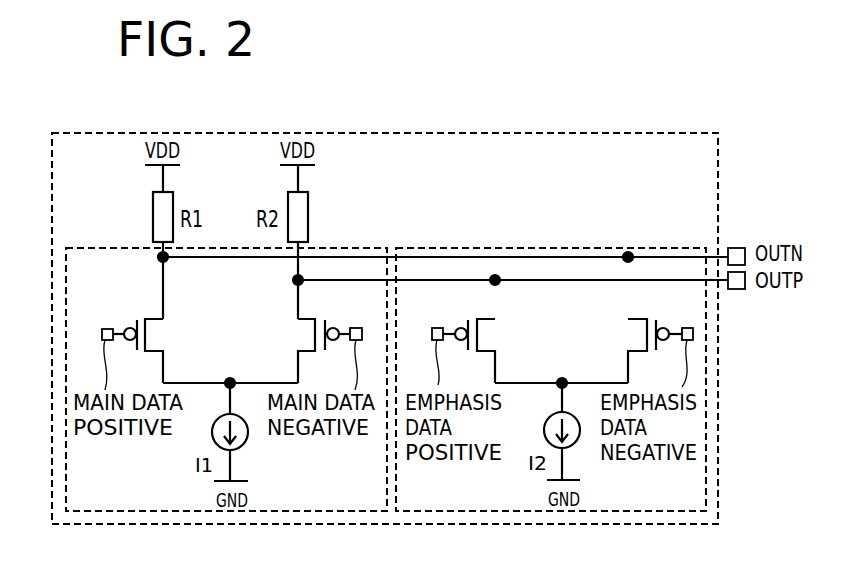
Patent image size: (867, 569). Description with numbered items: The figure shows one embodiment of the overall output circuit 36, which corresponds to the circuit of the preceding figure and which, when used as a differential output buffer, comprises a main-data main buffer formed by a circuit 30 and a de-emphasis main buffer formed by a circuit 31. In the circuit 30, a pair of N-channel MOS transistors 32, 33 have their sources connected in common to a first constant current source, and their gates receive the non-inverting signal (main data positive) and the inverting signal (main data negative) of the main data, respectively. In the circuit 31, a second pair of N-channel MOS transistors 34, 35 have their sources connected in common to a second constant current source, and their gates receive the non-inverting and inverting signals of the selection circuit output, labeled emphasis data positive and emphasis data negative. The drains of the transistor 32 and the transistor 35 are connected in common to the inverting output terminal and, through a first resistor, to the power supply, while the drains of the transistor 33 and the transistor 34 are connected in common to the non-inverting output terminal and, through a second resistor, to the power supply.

The circuit 30 is at (335, 248).
The circuit 31 is at (423, 248).
The N-channel MOS transistor 32 is at (158, 333).
The N-channel MOS transistor 33 is at (296, 333).
The N-channel MOS transistor 34 is at (492, 337).
The N-channel MOS transistor 35 is at (633, 340).
The circuit 36 is at (698, 140).